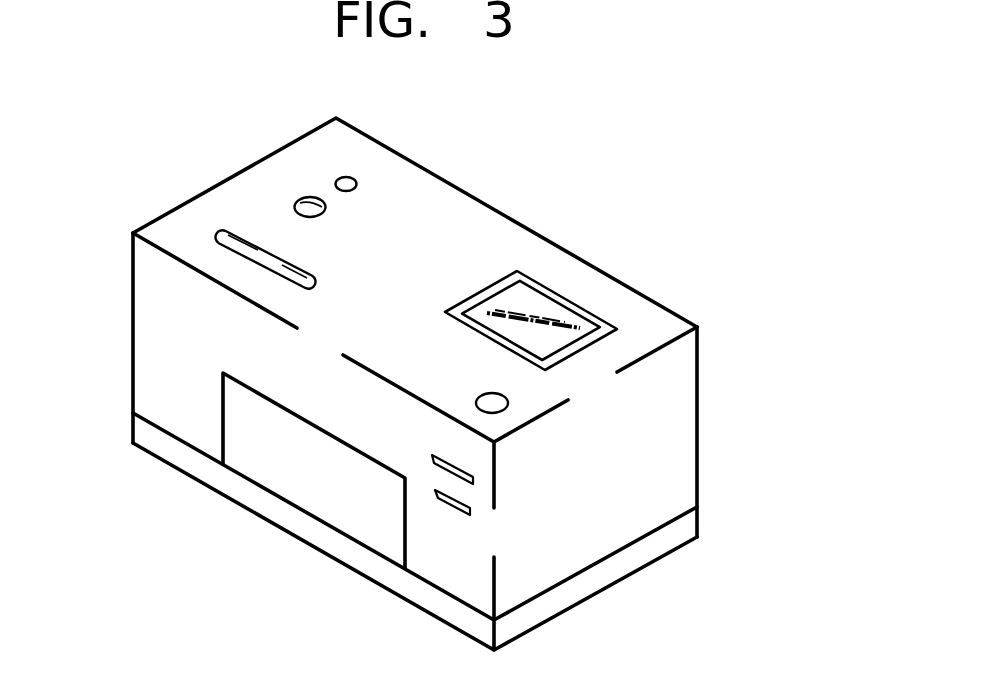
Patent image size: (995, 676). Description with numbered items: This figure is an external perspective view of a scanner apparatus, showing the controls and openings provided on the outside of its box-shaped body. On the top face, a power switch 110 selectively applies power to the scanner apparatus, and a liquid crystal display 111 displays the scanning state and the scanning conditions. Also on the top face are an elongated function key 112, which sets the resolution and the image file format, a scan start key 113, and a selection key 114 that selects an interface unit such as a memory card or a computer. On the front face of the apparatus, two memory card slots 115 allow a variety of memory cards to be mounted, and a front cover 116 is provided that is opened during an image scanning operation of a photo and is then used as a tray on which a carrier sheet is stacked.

The power switch 110 is at (493, 400).
The liquid crystal display 111 is at (535, 305).
The function key 112 is at (227, 232).
The scan start key 113 is at (307, 198).
The selection key 114 is at (346, 186).
The memory card slots 115 is at (464, 484).
The front cover 116 is at (338, 477).